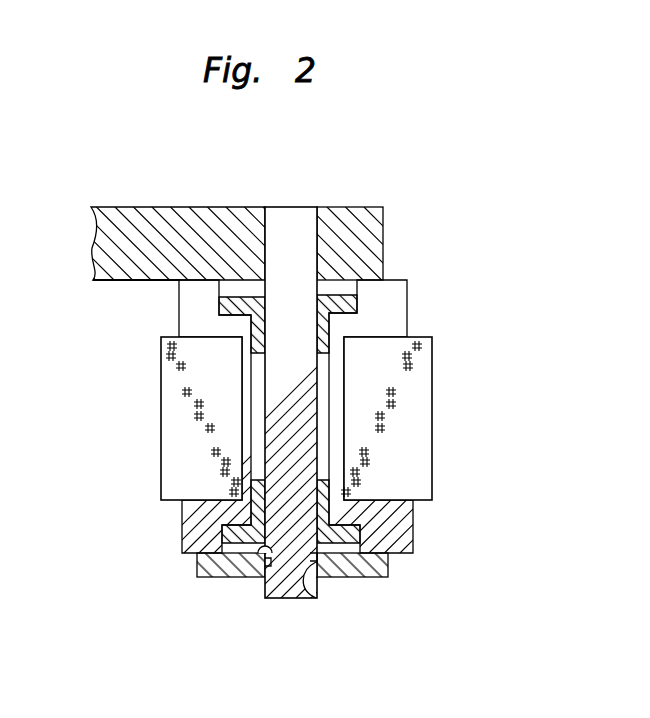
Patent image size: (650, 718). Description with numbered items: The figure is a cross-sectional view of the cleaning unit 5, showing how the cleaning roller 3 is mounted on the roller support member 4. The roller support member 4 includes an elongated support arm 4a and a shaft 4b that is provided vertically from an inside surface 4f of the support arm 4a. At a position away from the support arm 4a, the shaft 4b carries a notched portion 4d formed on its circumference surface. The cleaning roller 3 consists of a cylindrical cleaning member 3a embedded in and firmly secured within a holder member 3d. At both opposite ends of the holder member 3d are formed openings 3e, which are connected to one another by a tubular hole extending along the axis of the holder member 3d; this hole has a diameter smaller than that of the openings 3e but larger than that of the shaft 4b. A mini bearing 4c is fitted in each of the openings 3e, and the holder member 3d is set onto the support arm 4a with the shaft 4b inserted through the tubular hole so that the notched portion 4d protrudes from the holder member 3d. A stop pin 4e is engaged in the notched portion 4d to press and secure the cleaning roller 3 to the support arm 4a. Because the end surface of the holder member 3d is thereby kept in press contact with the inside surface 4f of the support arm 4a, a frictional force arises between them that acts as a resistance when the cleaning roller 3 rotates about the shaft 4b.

The cleaning roller 3 is at (550, 376).
The cylindrical cleaning member 3a is at (425, 418).
The holder member 3d is at (405, 522).
The openings 3e is at (338, 278).
The roller support member 4 is at (183, 207).
The support arm 4a is at (372, 228).
The shaft 4b is at (279, 583).
The mini bearing 4c is at (228, 305).
The notched portion 4d is at (306, 570).
The stop pin 4e is at (250, 572).
The inside surface 4f is at (128, 281).
The cleaning unit 5 is at (447, 140).